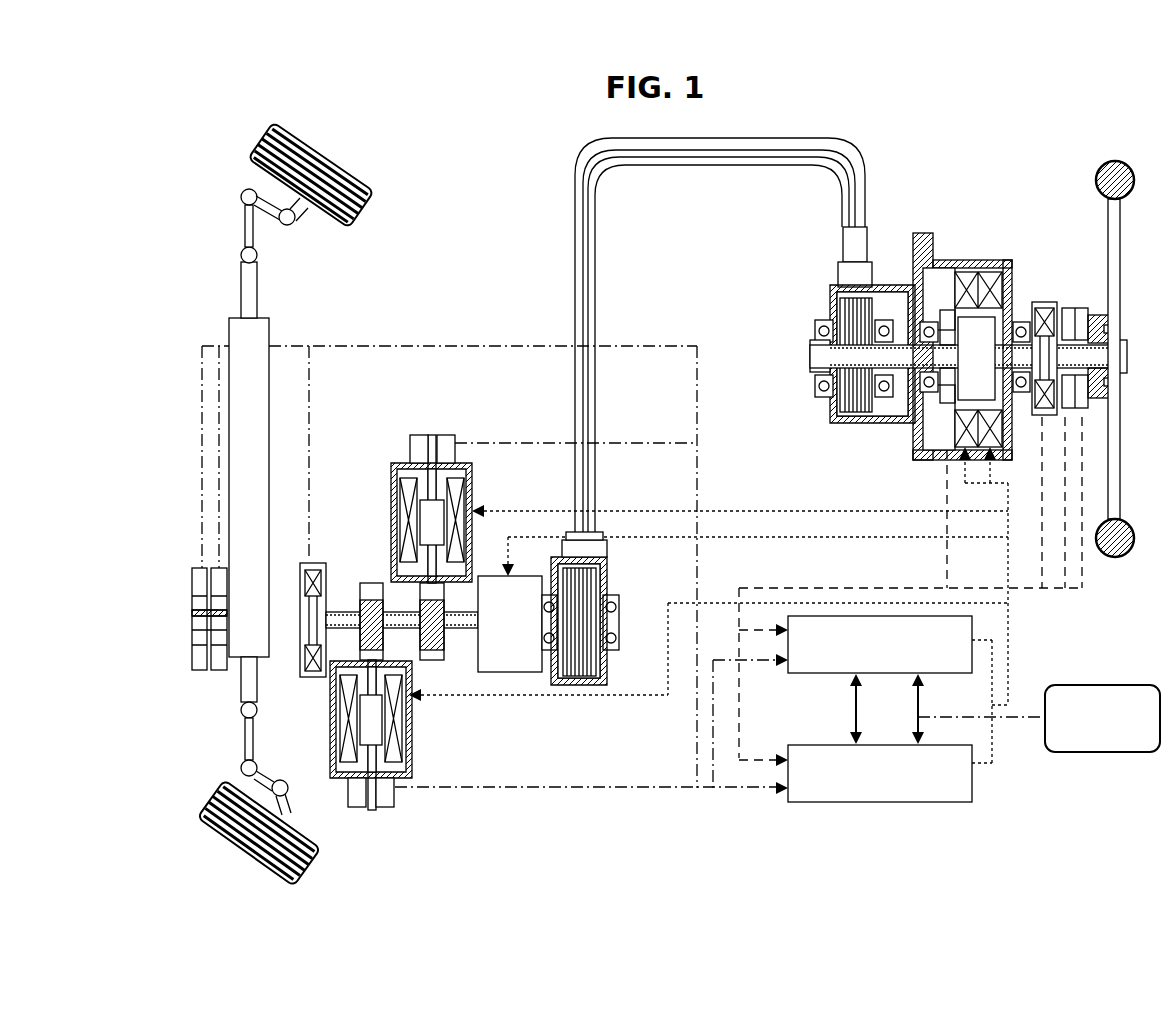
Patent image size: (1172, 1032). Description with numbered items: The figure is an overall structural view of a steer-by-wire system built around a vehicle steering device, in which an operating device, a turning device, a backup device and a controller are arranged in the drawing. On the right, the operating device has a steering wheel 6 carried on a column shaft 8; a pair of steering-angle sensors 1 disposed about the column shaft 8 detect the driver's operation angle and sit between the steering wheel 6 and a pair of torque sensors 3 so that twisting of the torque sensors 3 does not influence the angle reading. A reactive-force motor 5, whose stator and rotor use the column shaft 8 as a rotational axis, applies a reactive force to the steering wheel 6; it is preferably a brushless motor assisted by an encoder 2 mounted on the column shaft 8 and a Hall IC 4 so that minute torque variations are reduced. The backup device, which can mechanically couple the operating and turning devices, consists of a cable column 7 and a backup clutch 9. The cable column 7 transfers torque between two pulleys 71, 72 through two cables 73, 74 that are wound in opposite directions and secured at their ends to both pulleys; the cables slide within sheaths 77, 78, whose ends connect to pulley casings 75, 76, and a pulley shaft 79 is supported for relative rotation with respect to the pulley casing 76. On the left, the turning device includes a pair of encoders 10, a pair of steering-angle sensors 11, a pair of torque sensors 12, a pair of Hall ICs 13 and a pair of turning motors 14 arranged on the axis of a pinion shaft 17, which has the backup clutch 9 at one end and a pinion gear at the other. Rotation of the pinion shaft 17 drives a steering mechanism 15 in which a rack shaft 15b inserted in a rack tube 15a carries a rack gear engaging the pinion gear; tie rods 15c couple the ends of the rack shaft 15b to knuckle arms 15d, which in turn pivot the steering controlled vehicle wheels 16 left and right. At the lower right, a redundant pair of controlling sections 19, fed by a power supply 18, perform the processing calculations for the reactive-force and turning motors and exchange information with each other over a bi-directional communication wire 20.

The steering-angle sensor 1 is at (1069, 307).
The encoder 2 is at (947, 392).
The torque sensor 3 is at (1044, 302).
The Hall integrated circuit 4 is at (1013, 310).
The reactive-force motor 5 is at (942, 258).
The steering wheel 6 is at (1122, 240).
The cable column 7 is at (689, 335).
The column shaft 8 is at (1118, 395).
The backup clutch 9 is at (515, 673).
The encoder 10 is at (450, 437).
The steering-angle sensor 11 is at (204, 670).
The torque sensor 12 is at (312, 563).
The Hall IC 13 is at (433, 635).
The turning motor 14 is at (470, 485).
The steering mechanism 15 is at (230, 421).
The rack tube 15a is at (270, 328).
The rack shaft 15b is at (240, 290).
The tie rod 15c is at (258, 742).
The knuckle arm 15d is at (244, 786).
The steering controlled vehicle wheel 16 is at (287, 126).
The pinion shaft 17 is at (338, 615).
The power supply 18 is at (1115, 685).
The controlling section 19 is at (815, 673).
The bi-directional communication wire 20 is at (852, 710).
The pulley 71 is at (827, 382).
The pulley 72 is at (605, 612).
The cable 73 is at (830, 405).
The cable 74 is at (858, 423).
The pulley casing 75 is at (832, 287).
The pulley casing 76 is at (607, 670).
The sheath 77 is at (597, 290).
The sheath 78 is at (574, 280).
The pulley shaft 79 is at (619, 622).